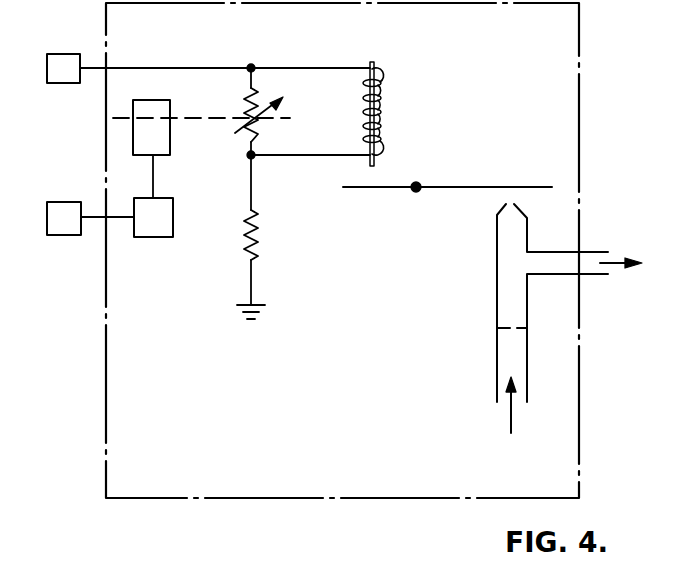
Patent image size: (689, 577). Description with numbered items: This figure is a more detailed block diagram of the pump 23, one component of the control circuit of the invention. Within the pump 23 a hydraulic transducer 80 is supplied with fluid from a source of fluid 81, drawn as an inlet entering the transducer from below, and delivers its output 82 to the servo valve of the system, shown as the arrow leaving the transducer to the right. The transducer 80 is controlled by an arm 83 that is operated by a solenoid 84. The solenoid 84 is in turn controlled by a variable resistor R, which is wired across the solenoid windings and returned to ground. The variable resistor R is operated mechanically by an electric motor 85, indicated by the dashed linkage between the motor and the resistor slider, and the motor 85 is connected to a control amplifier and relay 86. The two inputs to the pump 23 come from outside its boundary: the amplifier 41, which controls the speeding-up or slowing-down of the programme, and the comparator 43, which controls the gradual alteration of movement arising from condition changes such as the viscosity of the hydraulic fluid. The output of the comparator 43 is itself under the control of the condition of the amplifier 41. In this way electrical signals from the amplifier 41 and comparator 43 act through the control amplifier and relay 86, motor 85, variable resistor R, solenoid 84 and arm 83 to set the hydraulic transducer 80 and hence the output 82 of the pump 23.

The pump 23 is at (357, 350).
The amplifier 41 is at (208, 68).
The comparator 43 is at (90, 218).
The hydraulic transducer 80 is at (497, 248).
The source of fluid 81 is at (511, 422).
The output 82 is at (590, 252).
The arm 83 is at (480, 183).
The solenoid 84 is at (383, 117).
The electric motor 85 is at (201, 127).
The control amplifier and relay 86 is at (153, 196).
The variable resistor R is at (245, 111).